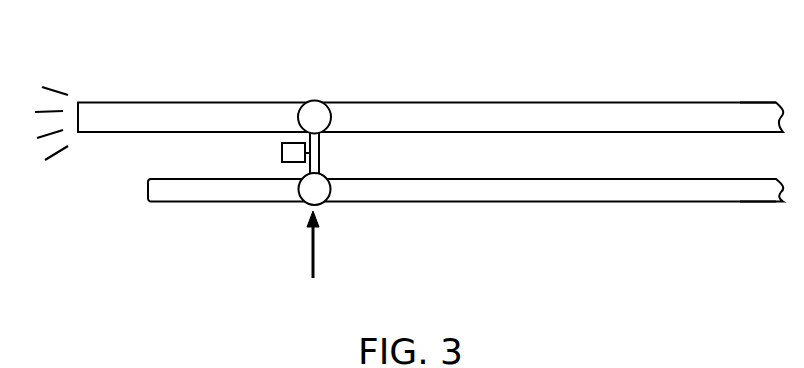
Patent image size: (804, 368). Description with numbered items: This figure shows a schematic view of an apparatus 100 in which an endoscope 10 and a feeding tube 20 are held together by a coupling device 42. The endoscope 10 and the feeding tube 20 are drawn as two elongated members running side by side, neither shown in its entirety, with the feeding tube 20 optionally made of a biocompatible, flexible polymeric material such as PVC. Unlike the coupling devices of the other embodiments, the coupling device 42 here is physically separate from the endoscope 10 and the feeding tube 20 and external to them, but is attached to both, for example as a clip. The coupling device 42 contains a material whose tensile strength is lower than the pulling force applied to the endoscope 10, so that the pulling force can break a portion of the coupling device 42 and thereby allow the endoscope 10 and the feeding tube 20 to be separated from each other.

The apparatus 100 is at (404, 156).
The endoscope 10 is at (434, 78).
The feeding tube 20 is at (465, 233).
The coupling device 42 is at (320, 155).